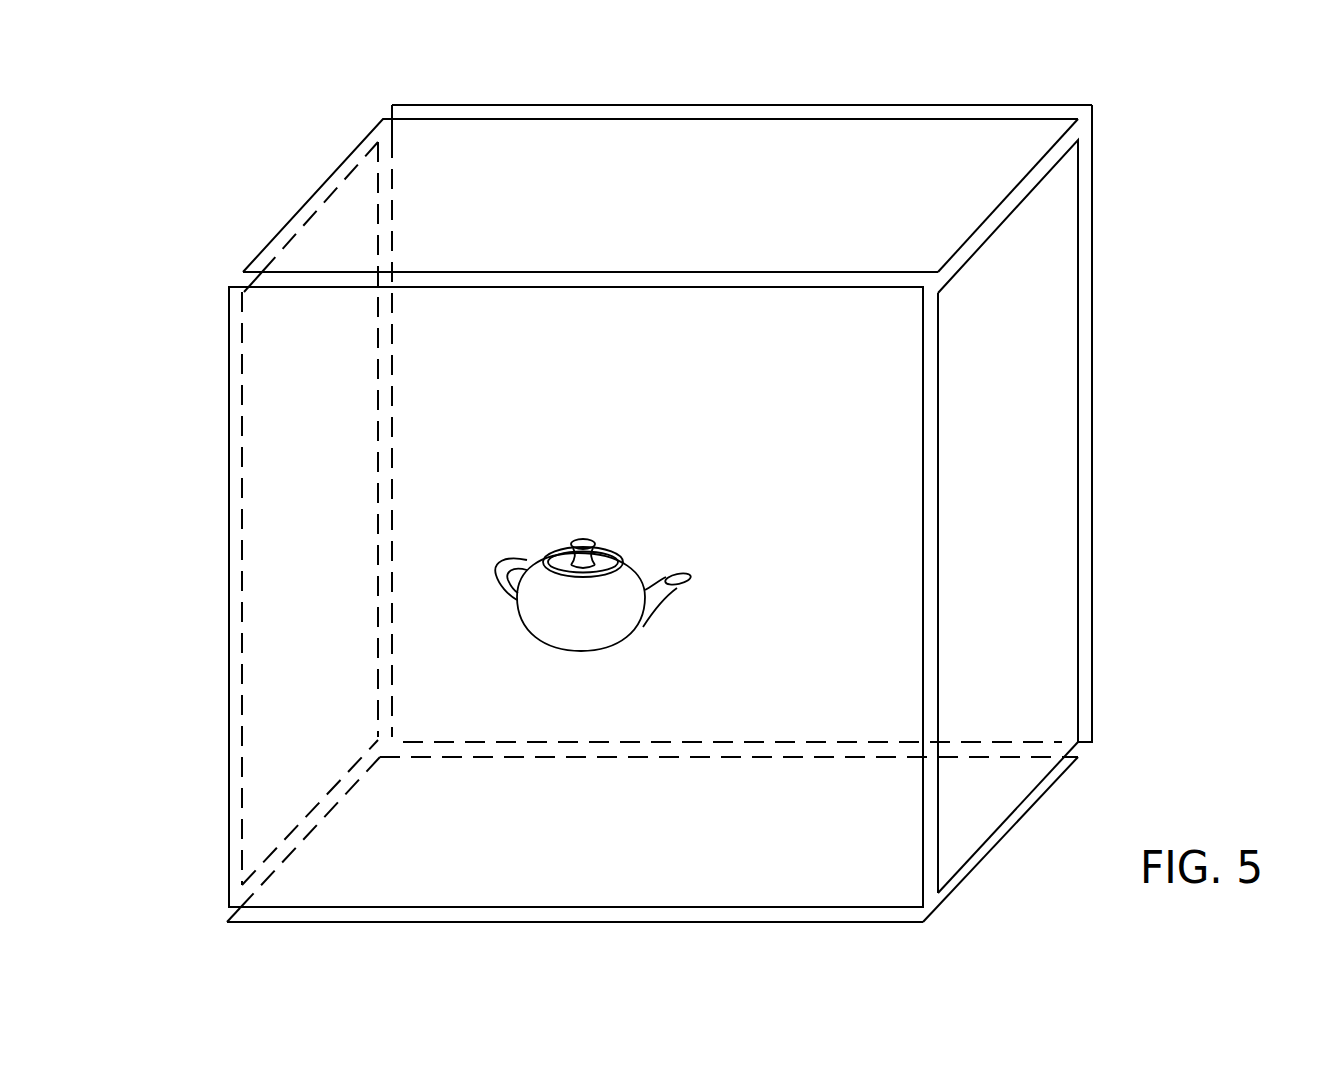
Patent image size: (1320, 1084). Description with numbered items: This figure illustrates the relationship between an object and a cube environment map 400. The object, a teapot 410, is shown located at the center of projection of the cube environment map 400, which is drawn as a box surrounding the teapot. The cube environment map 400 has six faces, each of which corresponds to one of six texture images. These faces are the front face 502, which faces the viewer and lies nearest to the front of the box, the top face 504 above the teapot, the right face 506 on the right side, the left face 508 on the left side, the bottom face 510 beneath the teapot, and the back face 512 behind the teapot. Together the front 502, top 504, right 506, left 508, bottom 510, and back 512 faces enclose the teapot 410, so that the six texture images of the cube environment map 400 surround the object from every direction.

The cube environment map 400 is at (1192, 97).
The teapot 410 is at (623, 556).
The front face 502 is at (748, 378).
The top face 504 is at (877, 195).
The right face 506 is at (1028, 325).
The left face 508 is at (270, 753).
The bottom face 510 is at (502, 817).
The back face 512 is at (475, 689).